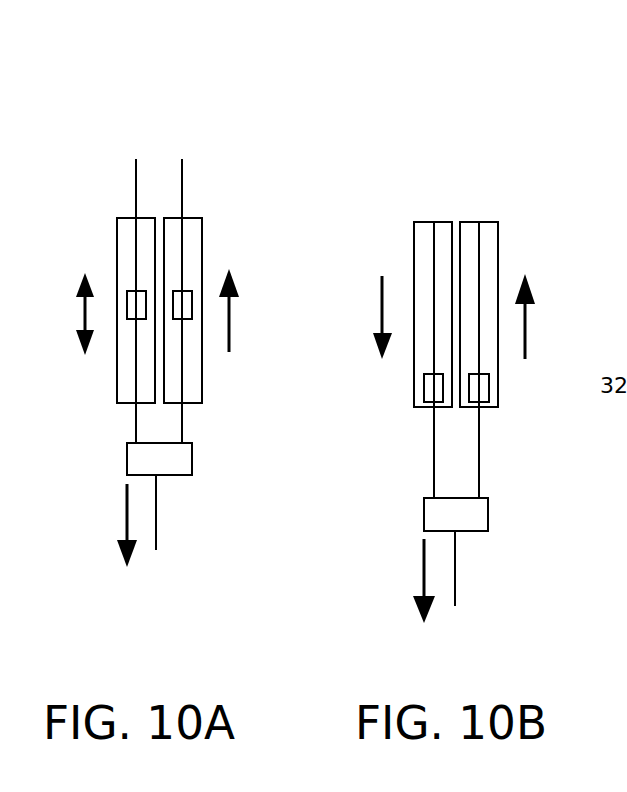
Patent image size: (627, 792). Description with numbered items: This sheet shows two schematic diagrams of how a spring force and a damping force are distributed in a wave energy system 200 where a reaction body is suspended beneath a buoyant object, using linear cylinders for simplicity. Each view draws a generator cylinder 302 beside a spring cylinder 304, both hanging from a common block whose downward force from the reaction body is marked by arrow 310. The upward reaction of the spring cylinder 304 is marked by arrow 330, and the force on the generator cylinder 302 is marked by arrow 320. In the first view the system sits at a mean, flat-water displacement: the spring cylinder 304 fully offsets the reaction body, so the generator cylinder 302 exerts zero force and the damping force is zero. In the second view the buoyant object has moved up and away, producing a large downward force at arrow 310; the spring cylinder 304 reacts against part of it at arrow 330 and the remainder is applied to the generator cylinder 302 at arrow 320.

In FIG. 10A, the gripper system 200 is at (158, 52).
In FIG. 10A, the generator cylinder 302 is at (119, 235).
In FIG. 10B, the generator cylinder 302 is at (415, 255).
In FIG. 10A, the spring cylinder 304 is at (192, 223).
In FIG. 10B, the spring cylinder 304 is at (492, 228).
In FIG. 10A, the arrow 310 is at (127, 533).
In FIG. 10B, the arrow 310 is at (423, 580).
In FIG. 10A, the arrow 320 is at (85, 307).
In FIG. 10B, the arrow 320 is at (382, 313).
In FIG. 10A, the arrow 330 is at (229, 323).
In FIG. 10B, the arrow 330 is at (528, 283).